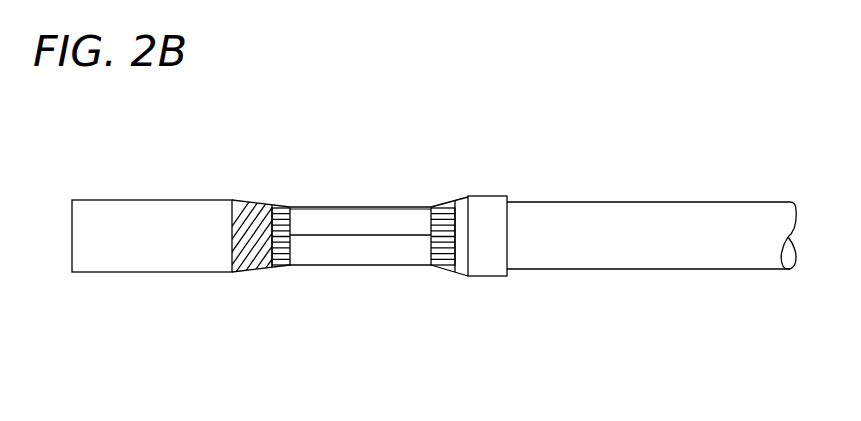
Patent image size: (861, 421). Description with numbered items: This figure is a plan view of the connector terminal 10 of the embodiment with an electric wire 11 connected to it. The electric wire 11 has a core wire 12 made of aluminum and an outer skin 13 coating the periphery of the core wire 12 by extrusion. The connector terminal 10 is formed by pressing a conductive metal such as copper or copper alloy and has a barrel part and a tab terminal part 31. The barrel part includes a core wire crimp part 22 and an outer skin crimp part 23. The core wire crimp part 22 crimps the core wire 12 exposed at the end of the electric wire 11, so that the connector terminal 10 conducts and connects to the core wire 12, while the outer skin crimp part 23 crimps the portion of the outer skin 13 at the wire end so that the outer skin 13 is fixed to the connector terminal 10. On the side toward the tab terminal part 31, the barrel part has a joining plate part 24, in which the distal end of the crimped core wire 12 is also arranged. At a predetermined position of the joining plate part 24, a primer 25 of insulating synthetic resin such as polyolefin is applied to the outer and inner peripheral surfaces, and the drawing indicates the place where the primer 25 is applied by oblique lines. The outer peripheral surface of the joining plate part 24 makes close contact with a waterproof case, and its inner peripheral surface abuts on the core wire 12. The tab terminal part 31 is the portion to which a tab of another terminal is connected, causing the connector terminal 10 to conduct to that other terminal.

The connector terminal 10 is at (508, 186).
The electric wire 11 is at (742, 200).
The core wire 12 is at (441, 257).
The outer skin 13 is at (563, 260).
The core wire crimp part 22 is at (343, 266).
The outer skin crimp part 23 is at (487, 277).
The joining plate part 24 is at (255, 271).
The primer 25 is at (242, 243).
The tab terminal part 31 is at (96, 284).